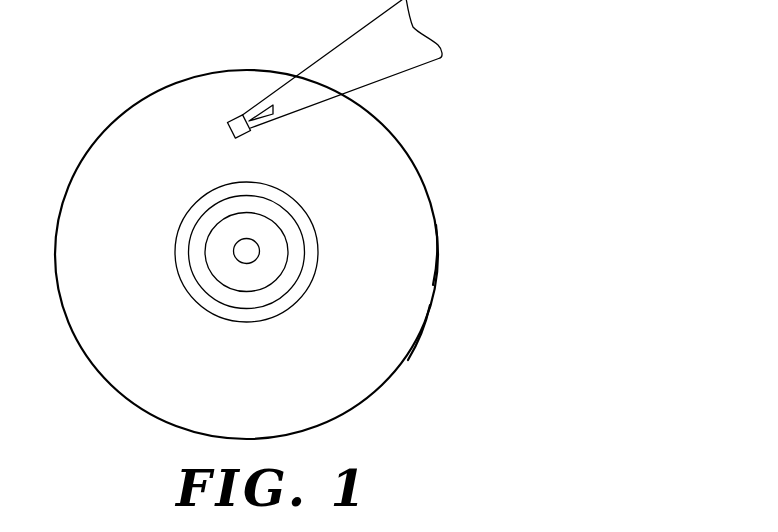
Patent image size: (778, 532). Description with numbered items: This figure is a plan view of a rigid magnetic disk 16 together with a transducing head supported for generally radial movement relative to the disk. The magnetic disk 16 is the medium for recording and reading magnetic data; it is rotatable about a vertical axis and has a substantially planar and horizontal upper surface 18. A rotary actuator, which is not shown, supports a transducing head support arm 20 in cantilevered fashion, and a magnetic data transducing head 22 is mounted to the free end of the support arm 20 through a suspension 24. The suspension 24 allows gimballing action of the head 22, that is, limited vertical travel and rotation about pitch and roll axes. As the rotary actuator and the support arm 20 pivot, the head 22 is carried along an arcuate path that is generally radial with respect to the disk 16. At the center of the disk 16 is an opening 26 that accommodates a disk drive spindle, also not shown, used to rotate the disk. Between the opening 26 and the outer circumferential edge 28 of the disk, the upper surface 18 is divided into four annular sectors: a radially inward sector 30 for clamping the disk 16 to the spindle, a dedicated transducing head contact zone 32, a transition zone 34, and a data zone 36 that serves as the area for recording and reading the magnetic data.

The magnetic disk 16 is at (110, 149).
The upper surface 18 is at (147, 205).
The transducing head support arm 20 is at (421, 60).
The magnetic data transducing head 22 is at (245, 136).
The suspension 24 is at (262, 108).
The opening 26 is at (247, 259).
The outer circumferential edge 28 is at (422, 337).
The radially inward sector 30 is at (277, 240).
The transducing head contact zone 32 is at (186, 261).
The transition zone 34 is at (227, 292).
The data zone 36 is at (412, 249).